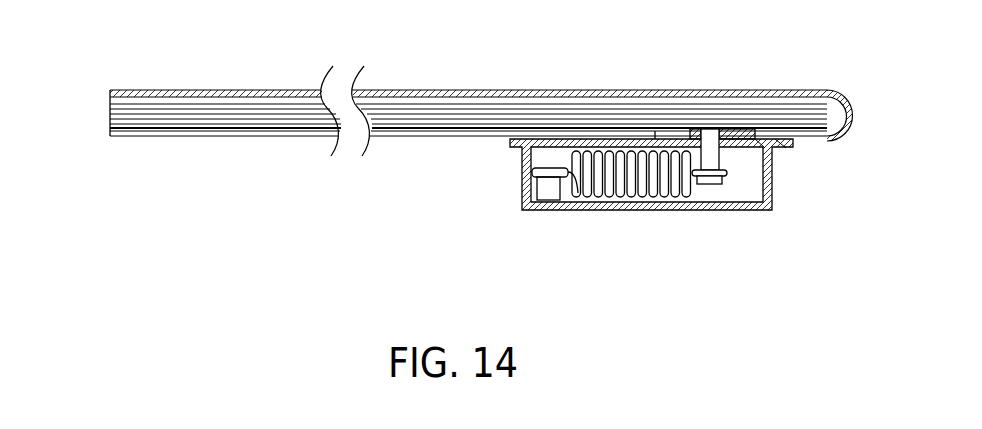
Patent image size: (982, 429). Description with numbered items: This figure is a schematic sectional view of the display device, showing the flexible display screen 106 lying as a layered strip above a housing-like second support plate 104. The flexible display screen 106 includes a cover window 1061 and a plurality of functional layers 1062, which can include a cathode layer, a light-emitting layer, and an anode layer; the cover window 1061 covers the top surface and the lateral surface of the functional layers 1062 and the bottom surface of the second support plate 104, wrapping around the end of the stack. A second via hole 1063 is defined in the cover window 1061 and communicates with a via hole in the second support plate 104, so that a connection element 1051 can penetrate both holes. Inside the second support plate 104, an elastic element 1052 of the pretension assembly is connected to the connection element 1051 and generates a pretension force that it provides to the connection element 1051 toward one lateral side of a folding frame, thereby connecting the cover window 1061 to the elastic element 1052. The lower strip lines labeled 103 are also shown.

The display panel 103 is at (442, 132).
The second support plate 104 is at (800, 130).
The flexible display screen 106 is at (63, 422).
The connection element 1051 is at (712, 129).
The elastic element 1052 is at (640, 203).
The cover window 1061 is at (577, 91).
The functional layers 1062 is at (108, 97).
The second via hole 1063 is at (733, 140).